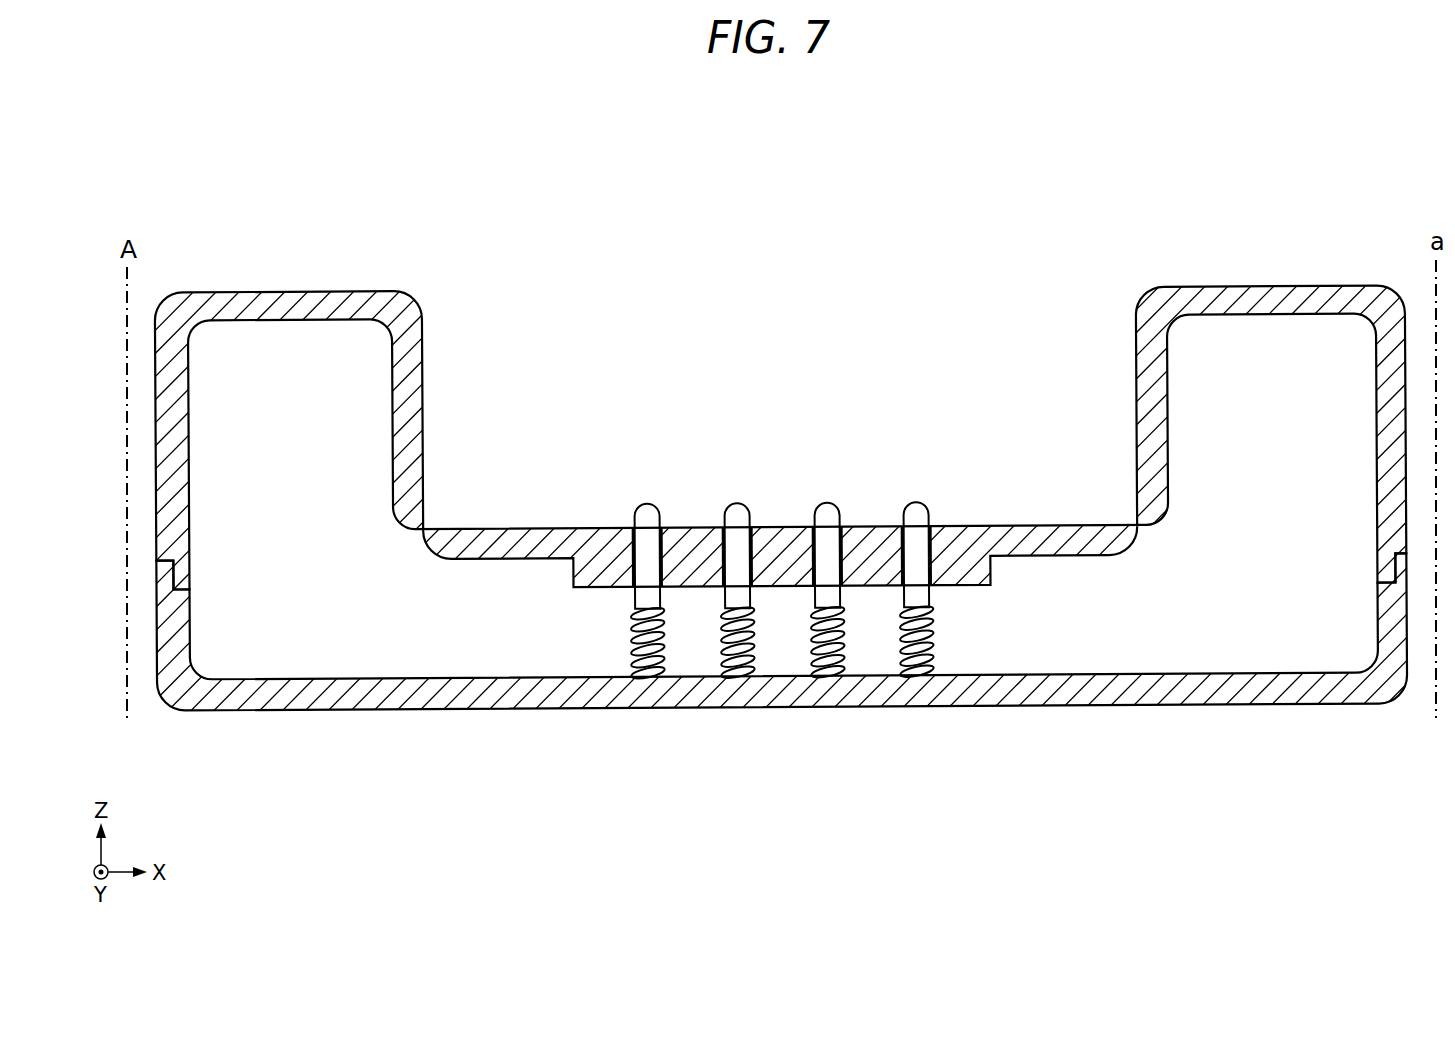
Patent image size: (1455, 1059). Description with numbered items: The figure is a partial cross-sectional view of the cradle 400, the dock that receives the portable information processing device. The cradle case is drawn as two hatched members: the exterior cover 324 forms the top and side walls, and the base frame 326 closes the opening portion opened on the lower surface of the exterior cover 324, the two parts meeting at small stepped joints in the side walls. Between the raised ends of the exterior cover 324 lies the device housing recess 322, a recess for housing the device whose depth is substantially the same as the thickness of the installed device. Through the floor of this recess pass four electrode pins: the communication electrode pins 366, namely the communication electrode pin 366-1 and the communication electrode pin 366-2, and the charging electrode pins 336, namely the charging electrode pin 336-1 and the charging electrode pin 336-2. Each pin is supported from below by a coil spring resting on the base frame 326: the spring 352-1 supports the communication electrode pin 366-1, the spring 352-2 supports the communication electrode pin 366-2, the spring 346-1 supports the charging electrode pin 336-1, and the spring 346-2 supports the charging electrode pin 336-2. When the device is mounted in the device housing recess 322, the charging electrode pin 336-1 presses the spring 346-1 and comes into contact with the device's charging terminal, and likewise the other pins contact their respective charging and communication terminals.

The cradle 400 is at (1347, 118).
The device housing recess 322 is at (876, 258).
The exterior cover 324 is at (1203, 303).
The base frame 326 is at (1197, 688).
The communication electrode pins 366 is at (775, 358).
The communication electrode pin 366-1 is at (649, 518).
The communication electrode pin 366-2 is at (738, 518).
The charging electrode pins 336 is at (960, 358).
The charging electrode pin 336-1 is at (828, 518).
The charging electrode pin 336-2 is at (916, 518).
The spring 352-1 is at (650, 670).
The spring 352-2 is at (738, 670).
The spring 346-1 is at (828, 670).
The spring 346-2 is at (917, 670).